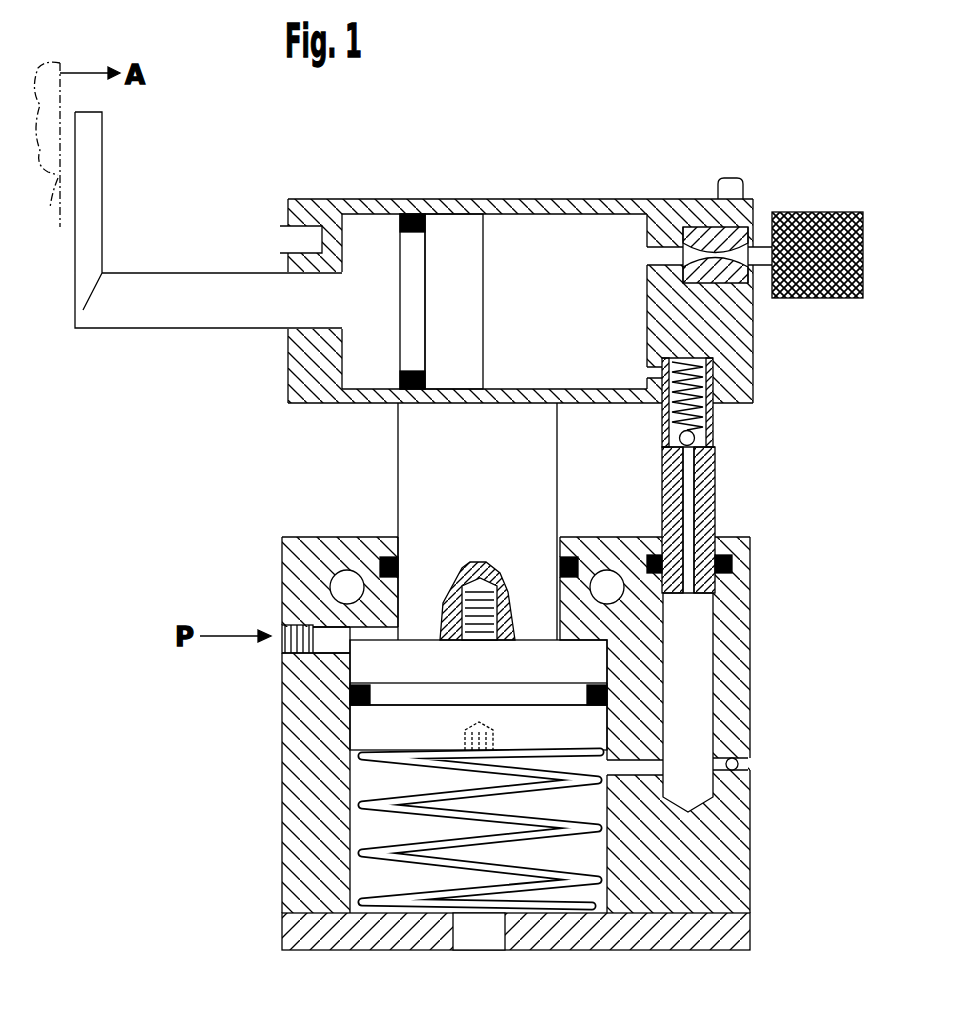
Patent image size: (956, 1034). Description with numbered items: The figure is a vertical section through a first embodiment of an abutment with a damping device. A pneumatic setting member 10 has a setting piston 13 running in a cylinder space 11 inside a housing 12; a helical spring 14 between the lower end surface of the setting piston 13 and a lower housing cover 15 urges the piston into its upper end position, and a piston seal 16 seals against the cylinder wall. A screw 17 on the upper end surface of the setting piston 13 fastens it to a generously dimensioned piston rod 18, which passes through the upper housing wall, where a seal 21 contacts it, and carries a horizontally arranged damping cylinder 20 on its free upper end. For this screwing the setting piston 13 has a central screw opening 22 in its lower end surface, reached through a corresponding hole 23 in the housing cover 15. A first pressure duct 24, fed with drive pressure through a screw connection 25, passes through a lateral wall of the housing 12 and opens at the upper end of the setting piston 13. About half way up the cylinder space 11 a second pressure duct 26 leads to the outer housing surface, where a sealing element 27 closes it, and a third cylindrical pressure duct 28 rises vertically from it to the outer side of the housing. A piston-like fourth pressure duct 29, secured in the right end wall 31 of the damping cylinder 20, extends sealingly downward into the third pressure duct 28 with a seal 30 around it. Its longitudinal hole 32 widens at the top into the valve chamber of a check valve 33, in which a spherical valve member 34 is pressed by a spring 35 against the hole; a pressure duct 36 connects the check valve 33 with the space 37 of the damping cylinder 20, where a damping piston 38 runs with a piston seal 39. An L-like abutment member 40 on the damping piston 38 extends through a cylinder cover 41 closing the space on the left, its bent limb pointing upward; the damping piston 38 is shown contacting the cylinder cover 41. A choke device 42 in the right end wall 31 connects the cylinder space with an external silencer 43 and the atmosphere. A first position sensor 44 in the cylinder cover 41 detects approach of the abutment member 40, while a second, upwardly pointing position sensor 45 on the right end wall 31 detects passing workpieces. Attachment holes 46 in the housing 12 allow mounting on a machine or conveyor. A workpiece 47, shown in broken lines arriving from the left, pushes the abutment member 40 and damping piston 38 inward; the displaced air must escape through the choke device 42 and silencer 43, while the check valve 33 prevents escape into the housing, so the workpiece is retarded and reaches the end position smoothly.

The pneumatic setting member 10 is at (262, 786).
The cylinder space 11 is at (360, 878).
The housing 12 is at (740, 866).
The setting piston 13 is at (370, 730).
The helical spring 14 is at (372, 810).
The lower housing cover 15 is at (357, 930).
The piston seal 16 is at (348, 693).
The screw 17 is at (447, 595).
The piston rod 18 is at (400, 436).
The damping cylinder 20 is at (585, 205).
The seal 21 is at (388, 555).
The central screw opening 22 is at (495, 728).
The hole 23 is at (480, 935).
The first pressure duct 24 is at (316, 572).
The screw connection 25 is at (283, 632).
The second pressure duct 26 is at (625, 777).
The sealing element 27 is at (740, 766).
The third pressure duct 28 is at (700, 663).
The fourth pressure duct 29 is at (663, 468).
The seal 30 is at (735, 565).
The right end wall 31 is at (742, 372).
The longitudinal hole 32 is at (690, 484).
The check valve 33 is at (722, 421).
The spherical valve member 34 is at (695, 447).
The spring 35 is at (668, 405).
The pressure duct 36 is at (656, 372).
The space 37 is at (542, 216).
The damping piston 38 is at (455, 215).
The piston seal 39 is at (415, 214).
The abutment member 40 is at (157, 285).
The cylinder cover 41 is at (296, 378).
The choke device 42 is at (700, 227).
The silencer 43 is at (815, 212).
The first position sensor 44 is at (282, 238).
The second position sensor 45 is at (730, 178).
The attachment holes 46 is at (347, 570).
The workpiece 47 is at (49, 159).